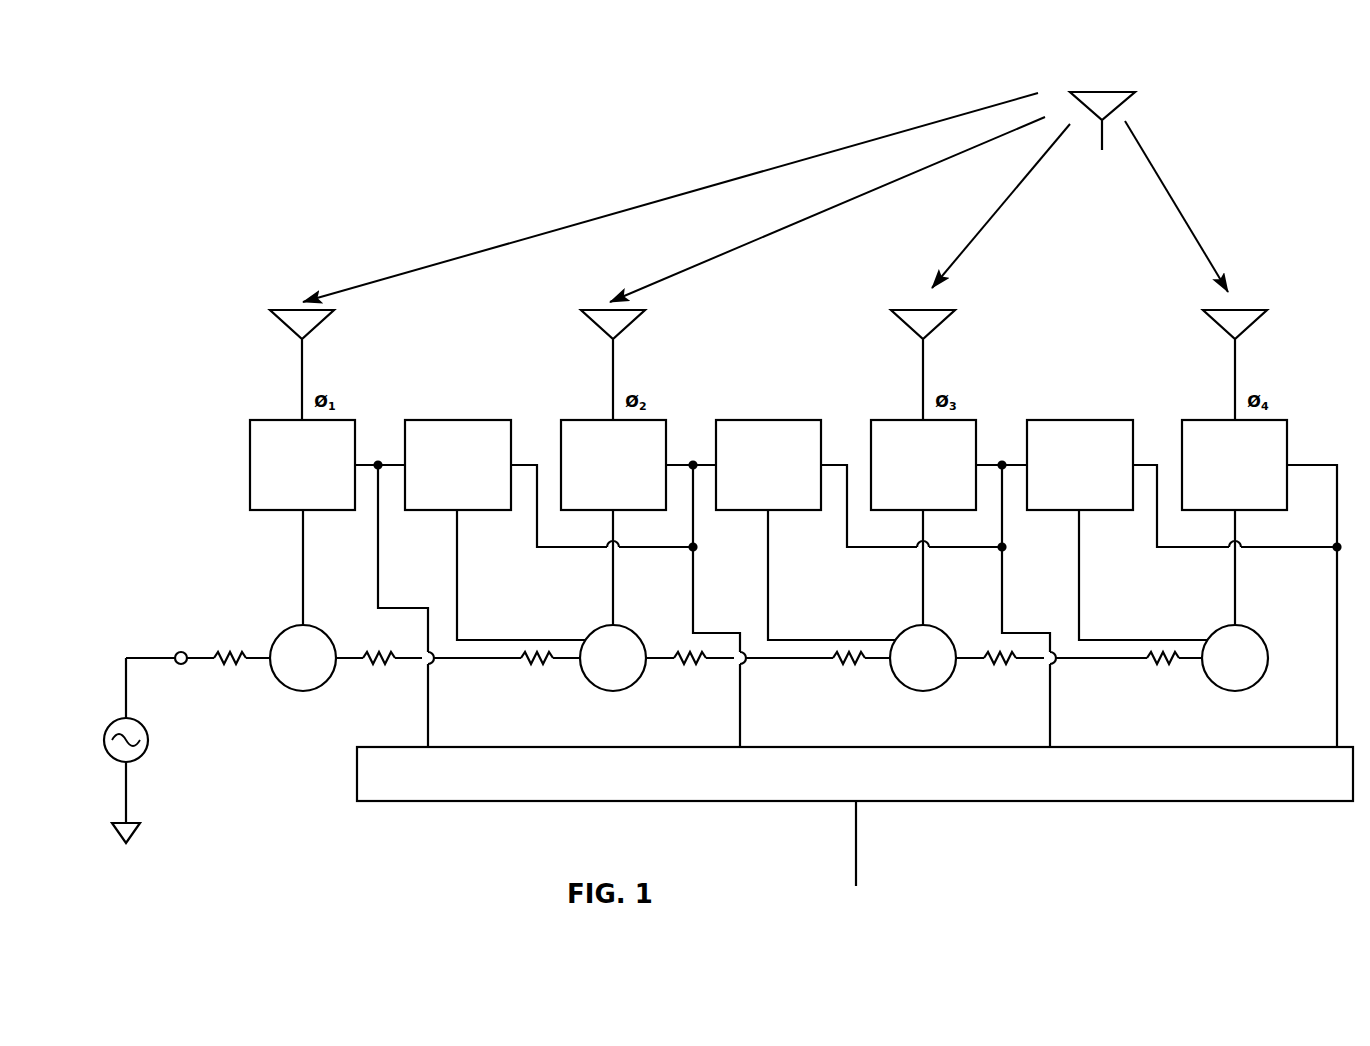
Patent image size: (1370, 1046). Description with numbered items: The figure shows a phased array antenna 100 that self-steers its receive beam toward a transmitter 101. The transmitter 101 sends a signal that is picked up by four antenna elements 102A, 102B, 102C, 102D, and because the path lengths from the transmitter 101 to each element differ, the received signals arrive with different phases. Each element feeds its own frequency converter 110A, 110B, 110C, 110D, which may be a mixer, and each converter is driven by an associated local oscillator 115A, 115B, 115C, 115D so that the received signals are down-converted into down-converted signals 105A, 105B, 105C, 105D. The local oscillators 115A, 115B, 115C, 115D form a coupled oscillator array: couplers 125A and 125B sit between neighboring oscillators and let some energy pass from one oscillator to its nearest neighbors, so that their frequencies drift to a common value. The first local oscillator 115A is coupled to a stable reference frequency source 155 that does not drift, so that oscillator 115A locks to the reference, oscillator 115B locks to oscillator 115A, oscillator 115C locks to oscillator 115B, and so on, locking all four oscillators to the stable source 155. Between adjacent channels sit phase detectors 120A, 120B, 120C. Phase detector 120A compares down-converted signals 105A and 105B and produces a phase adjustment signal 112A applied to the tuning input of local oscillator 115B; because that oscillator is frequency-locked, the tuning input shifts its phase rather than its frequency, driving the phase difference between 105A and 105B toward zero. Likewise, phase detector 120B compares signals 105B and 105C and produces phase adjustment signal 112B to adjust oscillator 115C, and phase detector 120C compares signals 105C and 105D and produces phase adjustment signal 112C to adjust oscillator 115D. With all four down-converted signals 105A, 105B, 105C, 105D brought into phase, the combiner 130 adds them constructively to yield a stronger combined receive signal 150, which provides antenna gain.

The phased array antenna 100 is at (733, 126).
The transmitter 101 is at (1139, 109).
The antenna element 102A is at (318, 322).
The antenna element 102B is at (629, 322).
The antenna element 102C is at (939, 322).
The antenna element 102D is at (1251, 322).
The down-converted signal 105A is at (394, 593).
The down-converted signal 105B is at (706, 593).
The down-converted signal 105C is at (1016, 593).
The down-converted signal 105D is at (1314, 593).
The frequency converter 110A is at (302, 465).
The frequency converter 110B is at (613, 465).
The frequency converter 110C is at (923, 465).
The frequency converter 110D is at (1234, 465).
The phase adjustment signal 112A is at (521, 575).
The phase adjustment signal 112B is at (831, 575).
The phase adjustment signal 112C is at (1143, 575).
The local oscillator 115A is at (303, 658).
The local oscillator 115B is at (613, 658).
The local oscillator 115C is at (923, 658).
The local oscillator 115D is at (1235, 658).
The phase detector 120A is at (458, 465).
The phase detector 120B is at (768, 465).
The phase detector 120C is at (1080, 465).
The coupler 125A is at (696, 672).
The coupler 125B is at (689, 672).
The combiner 130 is at (855, 774).
The combined receive signal 150 is at (857, 867).
The stable reference frequency source 155 is at (144, 750).